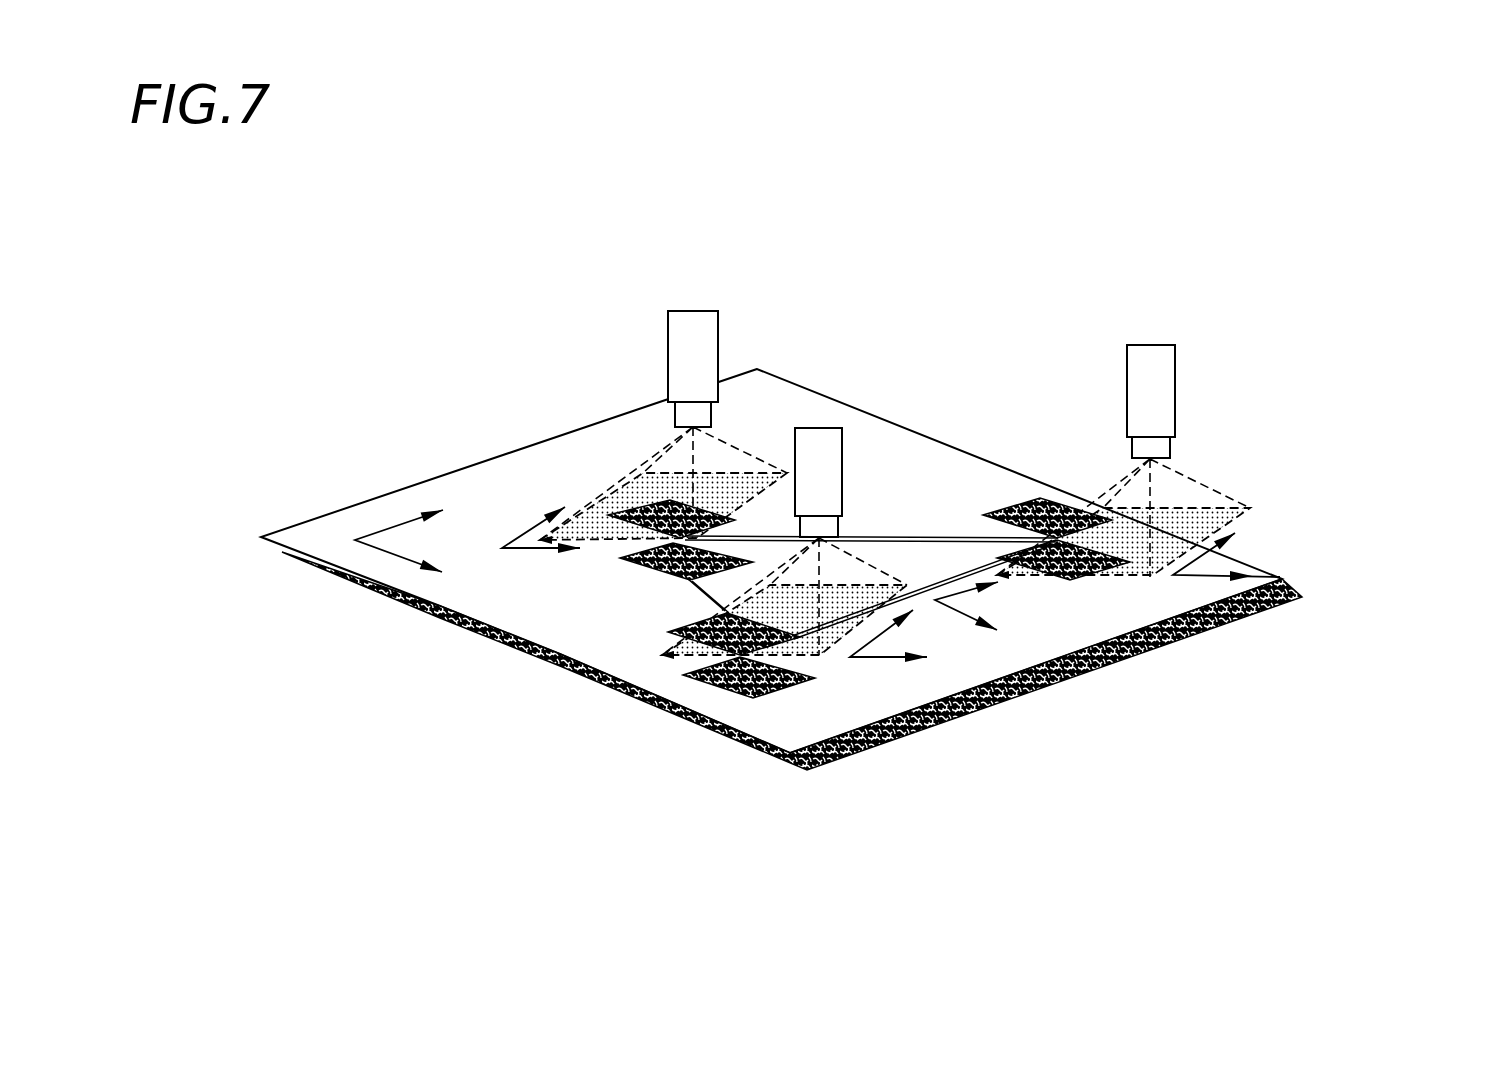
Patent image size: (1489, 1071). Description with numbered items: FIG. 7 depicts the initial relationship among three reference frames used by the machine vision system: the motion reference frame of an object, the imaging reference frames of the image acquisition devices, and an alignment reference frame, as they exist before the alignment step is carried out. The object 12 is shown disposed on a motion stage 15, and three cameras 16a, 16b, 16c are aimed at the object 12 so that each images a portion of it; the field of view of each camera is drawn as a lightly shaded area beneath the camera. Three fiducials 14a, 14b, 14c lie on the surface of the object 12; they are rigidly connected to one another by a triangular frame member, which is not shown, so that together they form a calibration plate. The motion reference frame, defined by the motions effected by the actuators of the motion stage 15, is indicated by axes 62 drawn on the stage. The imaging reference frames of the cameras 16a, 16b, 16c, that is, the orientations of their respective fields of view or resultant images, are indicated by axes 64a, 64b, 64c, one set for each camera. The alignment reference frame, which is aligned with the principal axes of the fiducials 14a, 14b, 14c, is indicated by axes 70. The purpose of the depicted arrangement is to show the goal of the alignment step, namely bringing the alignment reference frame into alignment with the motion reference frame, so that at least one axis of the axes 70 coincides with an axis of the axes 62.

The object 12 is at (1000, 660).
The fiducial 14a is at (1040, 506).
The fiducial 14b is at (700, 680).
The fiducial 14c is at (625, 562).
The motion stage 15 is at (1233, 622).
The camera 16a is at (1150, 358).
The camera 16b is at (821, 438).
The camera 16c is at (696, 322).
The axes 62 is at (384, 530).
The axes 64a is at (1210, 575).
The axes 64b is at (877, 657).
The axes 64c is at (517, 544).
The axes 70 is at (965, 612).